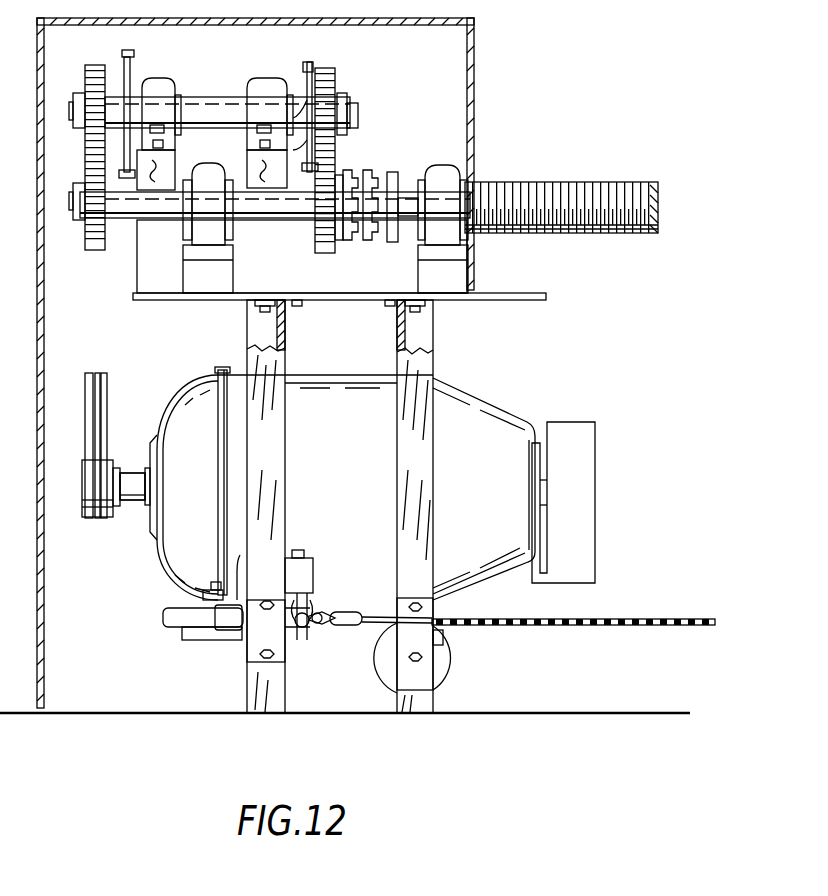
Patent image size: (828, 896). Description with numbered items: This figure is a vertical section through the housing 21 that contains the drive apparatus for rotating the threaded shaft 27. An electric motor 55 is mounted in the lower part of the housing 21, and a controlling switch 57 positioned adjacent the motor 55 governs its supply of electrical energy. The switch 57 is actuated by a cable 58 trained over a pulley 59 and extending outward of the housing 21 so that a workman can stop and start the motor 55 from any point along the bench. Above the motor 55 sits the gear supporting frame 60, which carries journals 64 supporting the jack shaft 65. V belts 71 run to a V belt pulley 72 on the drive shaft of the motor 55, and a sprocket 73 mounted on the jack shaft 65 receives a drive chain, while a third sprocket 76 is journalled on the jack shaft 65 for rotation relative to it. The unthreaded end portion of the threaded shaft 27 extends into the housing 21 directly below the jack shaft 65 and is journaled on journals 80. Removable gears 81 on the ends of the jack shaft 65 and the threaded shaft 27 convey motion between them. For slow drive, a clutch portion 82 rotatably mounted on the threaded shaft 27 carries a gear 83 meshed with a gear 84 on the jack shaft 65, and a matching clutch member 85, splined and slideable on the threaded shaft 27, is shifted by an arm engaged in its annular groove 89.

The housing 21 is at (474, 112).
The threaded shaft 27 is at (568, 183).
The electric motor 55 is at (327, 483).
The controlling switch 57 is at (313, 578).
The cable 58 is at (368, 628).
The pulley 59 is at (452, 662).
The gear supporting frame 60 is at (152, 190).
The journals 64 is at (165, 80).
The jack shaft 65 is at (206, 100).
The V belts 71 is at (107, 405).
The V belt pulley 72 is at (84, 517).
The sprocket 73 is at (141, 49).
The third sprocket 76 is at (312, 62).
The journals 80 is at (220, 238).
The removable gears 81 is at (85, 72).
The clutch portion 82 is at (345, 168).
The gear 83 is at (325, 253).
The gear 84 is at (336, 70).
The clutch member 85 is at (380, 168).
The annular groove 89 is at (392, 242).